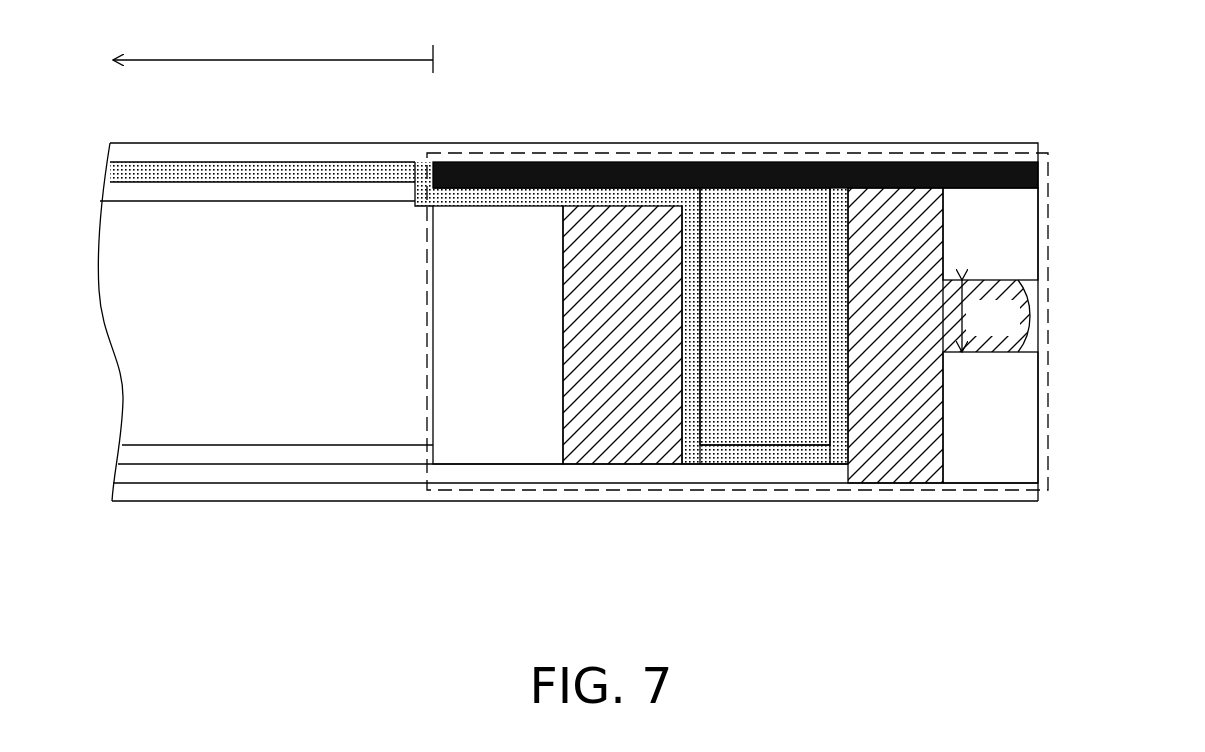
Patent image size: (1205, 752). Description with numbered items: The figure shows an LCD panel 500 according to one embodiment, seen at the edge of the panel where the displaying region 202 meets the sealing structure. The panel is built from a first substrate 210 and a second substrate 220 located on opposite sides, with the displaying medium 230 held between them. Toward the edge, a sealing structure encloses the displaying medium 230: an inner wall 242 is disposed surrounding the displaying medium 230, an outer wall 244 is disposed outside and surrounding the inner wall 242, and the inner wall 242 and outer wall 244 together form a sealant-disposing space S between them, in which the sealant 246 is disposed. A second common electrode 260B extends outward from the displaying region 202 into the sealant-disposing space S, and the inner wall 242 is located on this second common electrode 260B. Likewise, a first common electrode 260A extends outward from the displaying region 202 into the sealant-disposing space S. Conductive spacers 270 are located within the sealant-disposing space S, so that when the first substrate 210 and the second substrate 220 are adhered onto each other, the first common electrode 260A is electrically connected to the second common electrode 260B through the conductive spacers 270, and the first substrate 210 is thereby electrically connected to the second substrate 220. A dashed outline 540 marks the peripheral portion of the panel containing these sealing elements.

The displaying region 202 is at (273, 48).
The displaying medium 230 is at (270, 245).
The second substrate 220 is at (1020, 148).
The first substrate 210 is at (948, 495).
The first common electrode 260A is at (485, 477).
The second common electrode 260B is at (557, 200).
The inner wall 242 is at (477, 228).
The sealant 246 is at (653, 227).
The conductive spacers 270 is at (767, 227).
The sealant-disposing space S is at (888, 227).
The outer wall 244 is at (962, 223).
The peripheral region outline 540 is at (1048, 200).
The LCD panel 500 is at (1080, 618).